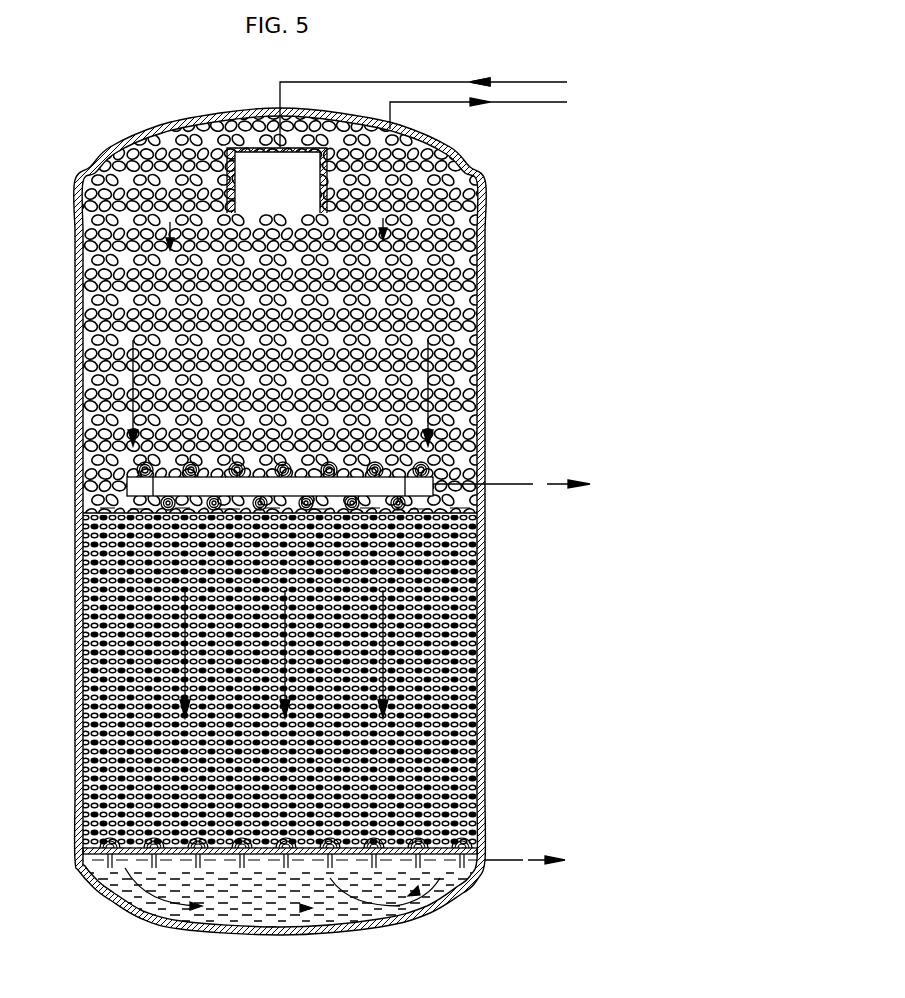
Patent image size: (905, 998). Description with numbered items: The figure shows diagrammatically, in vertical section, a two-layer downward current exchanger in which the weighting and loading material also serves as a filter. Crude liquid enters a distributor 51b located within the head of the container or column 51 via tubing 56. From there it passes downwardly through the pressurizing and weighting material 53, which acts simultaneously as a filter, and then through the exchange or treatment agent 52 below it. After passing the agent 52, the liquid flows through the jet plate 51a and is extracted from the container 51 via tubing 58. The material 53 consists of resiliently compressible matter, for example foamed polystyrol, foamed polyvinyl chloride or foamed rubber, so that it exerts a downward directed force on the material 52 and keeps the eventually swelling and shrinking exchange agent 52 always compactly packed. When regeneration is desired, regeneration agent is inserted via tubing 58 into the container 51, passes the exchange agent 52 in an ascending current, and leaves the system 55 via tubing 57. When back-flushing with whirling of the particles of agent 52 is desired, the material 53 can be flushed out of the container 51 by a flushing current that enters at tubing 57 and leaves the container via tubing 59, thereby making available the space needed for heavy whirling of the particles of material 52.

The container or column 51 is at (487, 770).
The jet plate 51a is at (477, 842).
The distributor 51b is at (257, 158).
The exchange or treatment agent 52 is at (471, 676).
The pressurizing and weighting material 53 is at (457, 274).
The system 55 is at (135, 487).
The tubing 56 is at (462, 74).
The tubing 57 is at (555, 486).
The tubing 58 is at (541, 864).
The tubing 59 is at (526, 101).